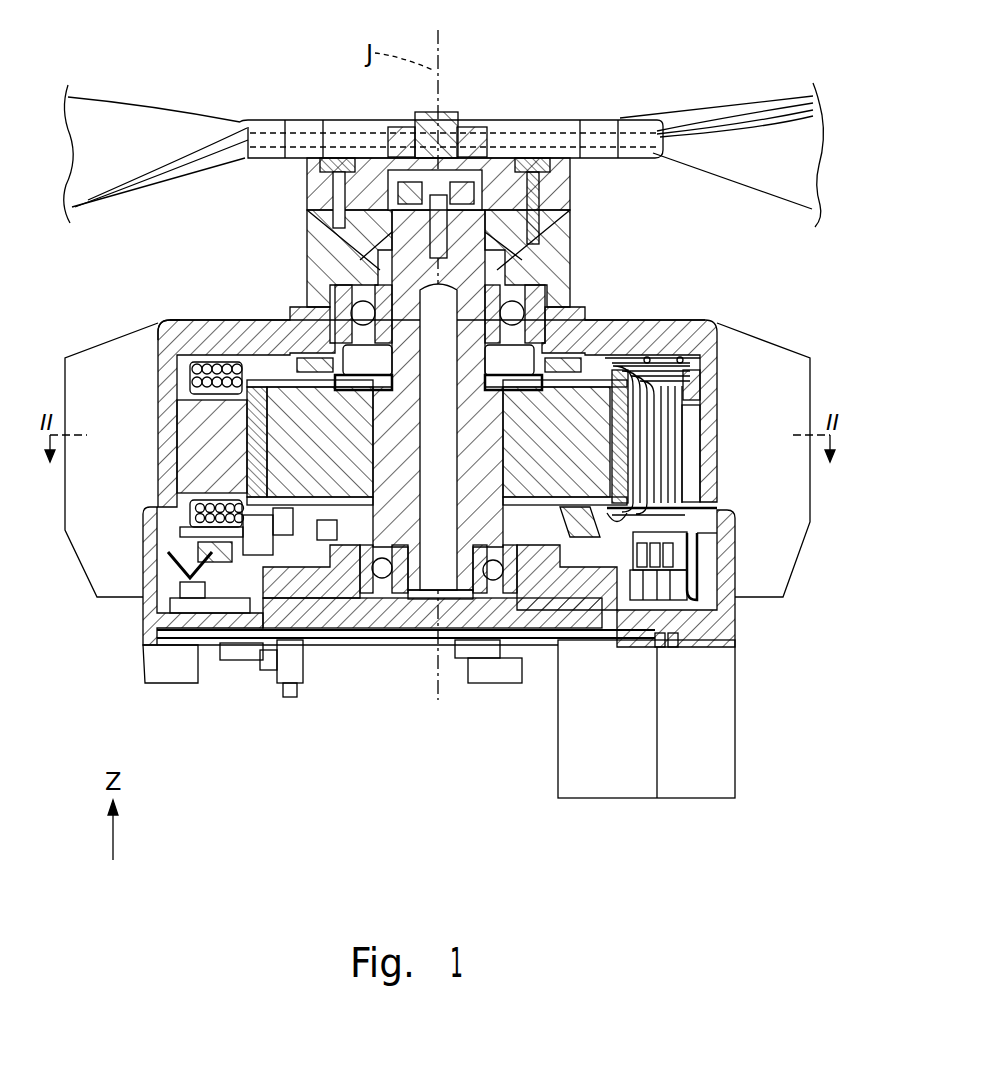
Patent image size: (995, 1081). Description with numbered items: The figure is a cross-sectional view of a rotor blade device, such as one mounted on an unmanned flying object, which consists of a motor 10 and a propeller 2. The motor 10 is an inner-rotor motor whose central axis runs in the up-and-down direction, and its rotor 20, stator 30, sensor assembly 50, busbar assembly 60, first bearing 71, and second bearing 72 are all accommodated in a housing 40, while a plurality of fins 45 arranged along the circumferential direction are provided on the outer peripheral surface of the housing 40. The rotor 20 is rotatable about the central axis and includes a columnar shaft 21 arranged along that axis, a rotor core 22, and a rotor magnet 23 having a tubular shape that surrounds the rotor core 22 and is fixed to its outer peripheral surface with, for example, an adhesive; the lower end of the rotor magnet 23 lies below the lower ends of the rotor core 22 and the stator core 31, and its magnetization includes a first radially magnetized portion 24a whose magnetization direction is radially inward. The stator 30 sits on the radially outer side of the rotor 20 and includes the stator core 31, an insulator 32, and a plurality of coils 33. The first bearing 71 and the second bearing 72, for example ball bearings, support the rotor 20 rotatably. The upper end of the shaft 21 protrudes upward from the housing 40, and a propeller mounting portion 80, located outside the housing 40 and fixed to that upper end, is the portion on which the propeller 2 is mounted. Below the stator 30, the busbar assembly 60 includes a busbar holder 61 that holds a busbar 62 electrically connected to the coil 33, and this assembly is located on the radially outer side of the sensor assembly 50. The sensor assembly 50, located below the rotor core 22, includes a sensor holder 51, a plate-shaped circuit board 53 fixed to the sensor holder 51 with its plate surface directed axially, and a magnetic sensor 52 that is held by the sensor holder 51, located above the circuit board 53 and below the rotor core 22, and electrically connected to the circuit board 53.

The propeller 2 is at (628, 120).
The motor 10 is at (464, 484).
The rotor 20 is at (549, 483).
The shaft 21 is at (471, 582).
The rotor core 22 is at (317, 475).
The rotor magnet 23 is at (630, 417).
The first radially magnetized portion 24a is at (690, 503).
The stator 30 is at (737, 590).
The stator core 31 is at (187, 437).
The insulator 32 is at (150, 323).
The coils 33 is at (212, 362).
The housing 40 is at (230, 310).
The fins 45 is at (140, 558).
The sensor assembly 50 is at (527, 640).
The sensor holder 51 is at (355, 585).
The magnetic sensor 52 is at (709, 532).
The circuit board 53 is at (578, 540).
The busbar assembly 60 is at (737, 595).
The busbar holder 61 is at (600, 635).
The busbar 62 is at (670, 648).
The first bearing 71 is at (383, 578).
The second bearing 72 is at (343, 305).
The propeller mounting portion 80 is at (575, 210).